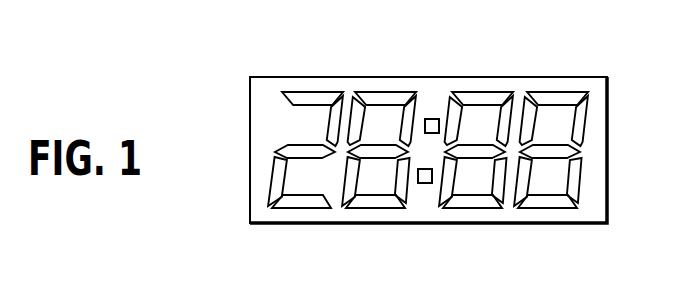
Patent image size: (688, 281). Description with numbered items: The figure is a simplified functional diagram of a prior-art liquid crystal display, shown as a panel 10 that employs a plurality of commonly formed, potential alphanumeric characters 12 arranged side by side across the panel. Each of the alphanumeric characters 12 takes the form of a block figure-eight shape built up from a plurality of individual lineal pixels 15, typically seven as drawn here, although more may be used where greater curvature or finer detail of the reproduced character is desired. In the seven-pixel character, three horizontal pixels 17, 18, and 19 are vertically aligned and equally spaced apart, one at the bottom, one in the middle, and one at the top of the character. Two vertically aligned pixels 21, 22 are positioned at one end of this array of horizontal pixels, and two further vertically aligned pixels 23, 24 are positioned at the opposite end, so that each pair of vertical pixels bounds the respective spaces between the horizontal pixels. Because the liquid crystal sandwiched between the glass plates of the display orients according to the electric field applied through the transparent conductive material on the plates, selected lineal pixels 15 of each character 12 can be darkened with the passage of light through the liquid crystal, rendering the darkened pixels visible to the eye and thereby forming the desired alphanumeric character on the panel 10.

The panel 10 is at (266, 112).
The alphanumeric characters 12 is at (485, 141).
The lineal pixels 15 is at (572, 98).
The horizontal pixel 17 is at (358, 207).
The horizontal pixel 18 is at (380, 148).
The horizontal pixel 19 is at (376, 94).
The vertical pixel 21 is at (448, 108).
The vertical pixel 22 is at (448, 175).
The vertical pixel 23 is at (512, 118).
The vertical pixel 24 is at (500, 172).